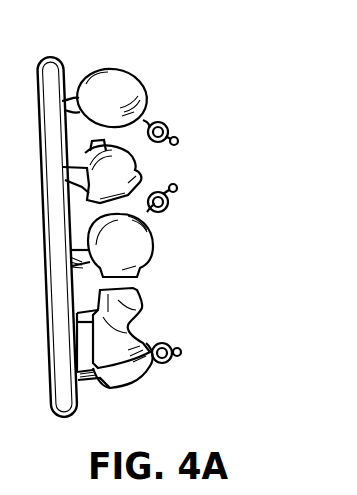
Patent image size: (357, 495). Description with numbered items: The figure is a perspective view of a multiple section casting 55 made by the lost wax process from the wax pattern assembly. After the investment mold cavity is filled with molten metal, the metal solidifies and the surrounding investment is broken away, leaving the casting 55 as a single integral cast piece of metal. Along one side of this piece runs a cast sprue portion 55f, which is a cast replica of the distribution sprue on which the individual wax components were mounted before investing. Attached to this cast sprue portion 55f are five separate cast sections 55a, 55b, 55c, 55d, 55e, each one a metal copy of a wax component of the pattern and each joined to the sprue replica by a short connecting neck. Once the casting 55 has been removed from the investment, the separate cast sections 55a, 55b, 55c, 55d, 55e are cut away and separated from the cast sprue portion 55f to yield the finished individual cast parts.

The casting 55 is at (36, 441).
The cast section 55a is at (123, 88).
The cast section 55b is at (142, 173).
The cast section 55c is at (153, 240).
The cast section 55d is at (143, 302).
The cast section 55e is at (147, 380).
The cast sprue portion 55f is at (50, 357).